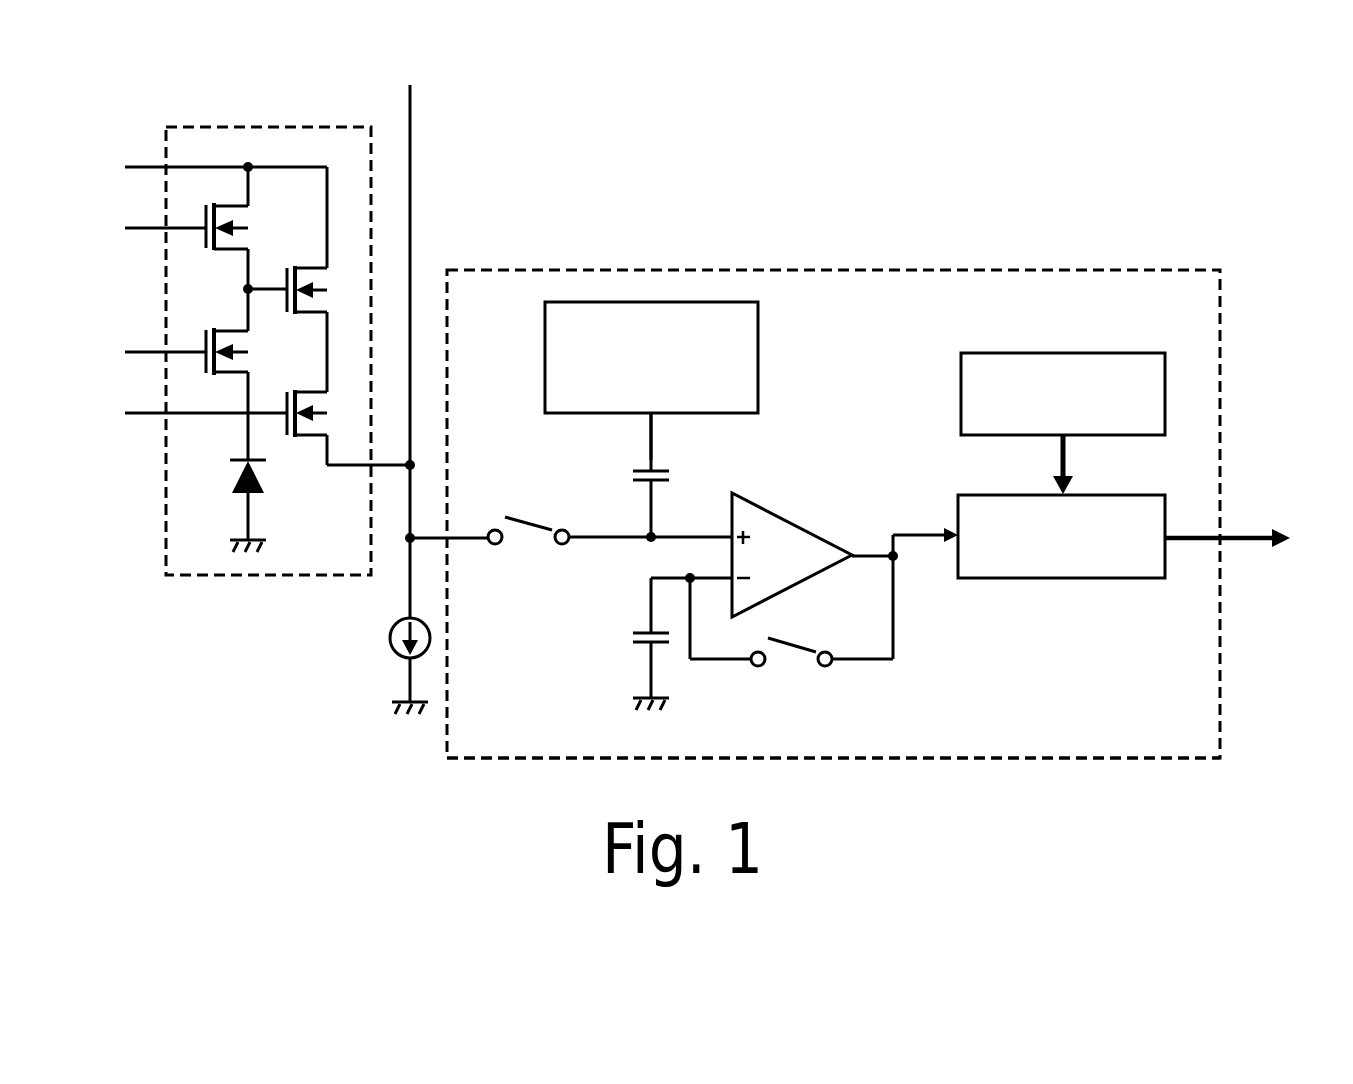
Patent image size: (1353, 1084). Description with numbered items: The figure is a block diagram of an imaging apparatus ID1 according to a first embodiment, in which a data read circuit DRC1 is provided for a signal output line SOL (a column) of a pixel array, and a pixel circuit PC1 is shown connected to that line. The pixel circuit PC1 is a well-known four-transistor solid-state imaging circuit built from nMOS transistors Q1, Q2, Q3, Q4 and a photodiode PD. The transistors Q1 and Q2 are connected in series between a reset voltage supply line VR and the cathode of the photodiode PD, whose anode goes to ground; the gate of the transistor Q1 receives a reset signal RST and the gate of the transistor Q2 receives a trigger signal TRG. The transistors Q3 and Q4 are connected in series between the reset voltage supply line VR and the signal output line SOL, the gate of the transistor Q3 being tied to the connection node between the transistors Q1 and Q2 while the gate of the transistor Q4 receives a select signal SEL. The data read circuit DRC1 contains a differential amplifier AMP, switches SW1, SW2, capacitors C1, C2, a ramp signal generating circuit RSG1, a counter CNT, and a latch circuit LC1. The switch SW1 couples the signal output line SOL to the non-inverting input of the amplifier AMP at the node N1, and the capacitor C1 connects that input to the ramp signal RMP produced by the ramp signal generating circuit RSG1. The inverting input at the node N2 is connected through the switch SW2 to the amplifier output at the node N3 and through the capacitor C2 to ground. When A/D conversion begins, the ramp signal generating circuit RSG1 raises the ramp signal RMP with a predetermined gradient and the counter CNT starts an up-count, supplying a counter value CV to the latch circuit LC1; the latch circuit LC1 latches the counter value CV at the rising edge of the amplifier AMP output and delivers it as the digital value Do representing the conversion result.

The imaging apparatus ID1 is at (1164, 154).
The pixel circuit PC1 is at (353, 558).
The reset voltage supply line VR is at (207, 168).
The reset signal RST is at (138, 225).
The trigger signal TRG is at (137, 352).
The select signal SEL is at (178, 415).
The transistor Q1 is at (221, 249).
The transistor Q2 is at (219, 380).
The transistor Q3 is at (287, 279).
The transistor Q4 is at (342, 417).
The photodiode PD is at (228, 506).
The signal output line SOL is at (437, 383).
The switch SW1 is at (569, 551).
The switch SW2 is at (791, 631).
The capacitor C1 is at (633, 475).
The capacitor C2 is at (633, 644).
The first node N1 is at (689, 523).
The second node N2 is at (691, 602).
The third node N3 is at (905, 562).
The differential amplifier AMP is at (792, 552).
The ramp signal RMP is at (679, 436).
The ramp signal generating circuit RSG1 is at (748, 408).
The counter CNT is at (1039, 425).
The counter value CV is at (1079, 464).
The latch circuit LC1 is at (1150, 570).
The digital value Do is at (1246, 538).
The data read circuit DRC1 is at (1195, 737).